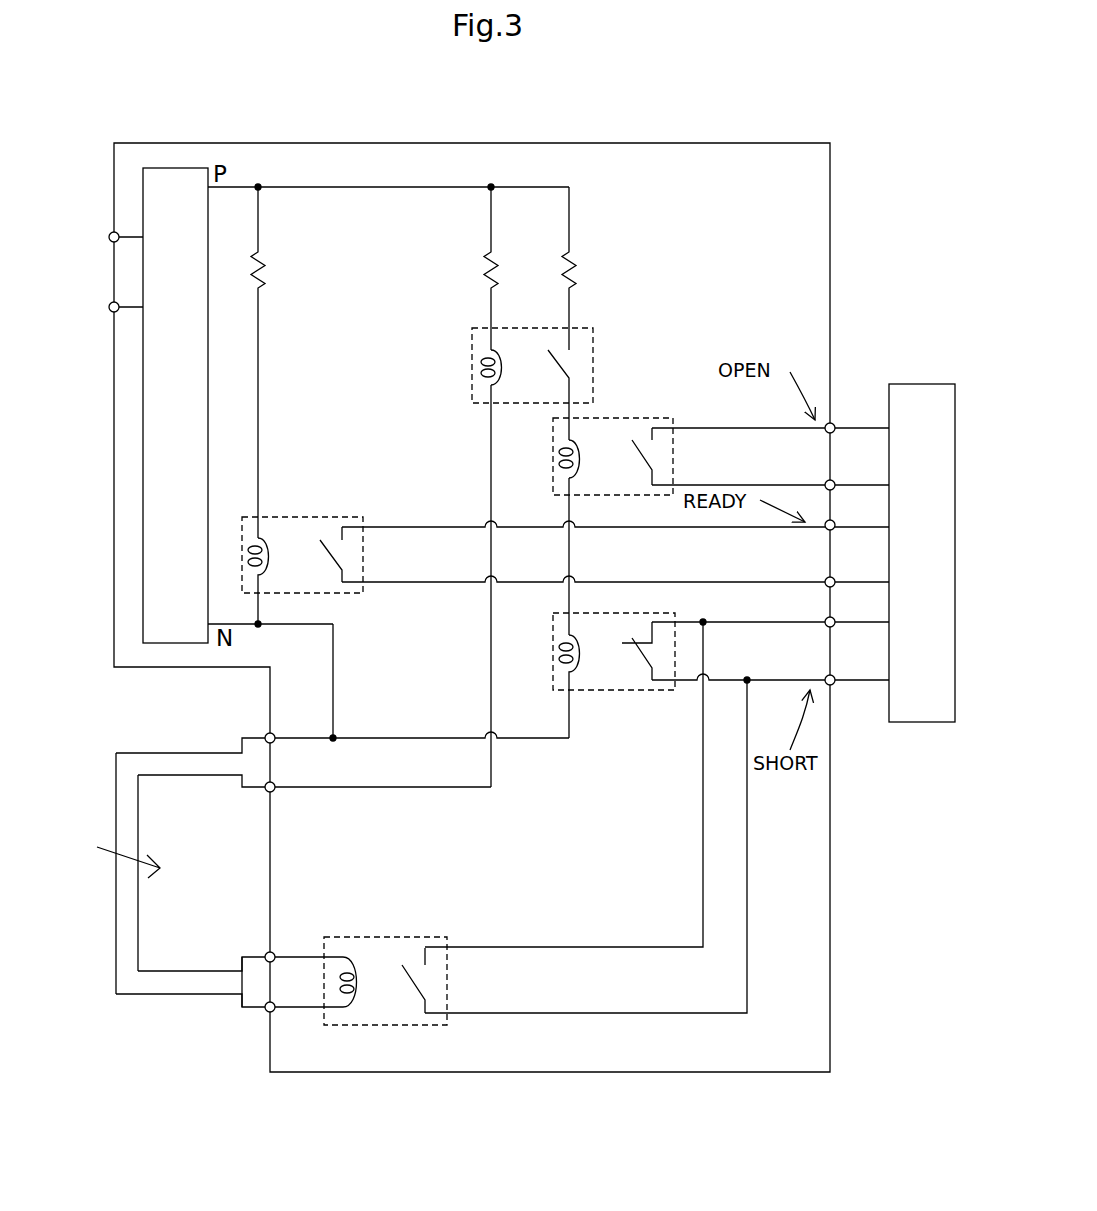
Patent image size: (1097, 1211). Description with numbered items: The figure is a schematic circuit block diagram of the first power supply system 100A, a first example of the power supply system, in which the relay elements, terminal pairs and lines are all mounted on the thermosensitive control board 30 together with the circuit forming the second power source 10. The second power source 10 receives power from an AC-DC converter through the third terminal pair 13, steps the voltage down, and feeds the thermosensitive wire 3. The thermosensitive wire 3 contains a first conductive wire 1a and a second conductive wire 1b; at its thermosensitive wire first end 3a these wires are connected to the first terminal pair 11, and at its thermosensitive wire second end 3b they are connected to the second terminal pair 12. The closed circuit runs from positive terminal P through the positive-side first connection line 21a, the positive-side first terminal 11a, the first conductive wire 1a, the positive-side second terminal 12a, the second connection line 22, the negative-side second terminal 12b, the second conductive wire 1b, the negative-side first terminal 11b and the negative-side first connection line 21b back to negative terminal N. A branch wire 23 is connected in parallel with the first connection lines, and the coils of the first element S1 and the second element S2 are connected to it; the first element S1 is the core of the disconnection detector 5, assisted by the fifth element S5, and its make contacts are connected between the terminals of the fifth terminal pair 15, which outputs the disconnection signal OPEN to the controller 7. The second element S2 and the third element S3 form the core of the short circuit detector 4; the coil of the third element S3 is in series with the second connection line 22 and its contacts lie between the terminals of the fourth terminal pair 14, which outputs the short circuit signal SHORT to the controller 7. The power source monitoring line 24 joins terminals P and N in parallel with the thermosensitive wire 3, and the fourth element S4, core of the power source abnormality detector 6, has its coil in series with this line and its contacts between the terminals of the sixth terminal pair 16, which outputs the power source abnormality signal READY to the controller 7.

The first power supply system 100A is at (742, 117).
The thermosensitive control board 30 is at (585, 140).
The second power source 10 is at (180, 168).
The third terminal pair 13 is at (98, 266).
The power source monitoring line 24 is at (260, 366).
The branch wire 23 is at (572, 217).
The disconnection detector 5 is at (614, 413).
The fifth element S5 is at (594, 353).
The first element S1 is at (638, 412).
The power source abnormality detector 6 is at (350, 598).
The fourth element S4 is at (320, 515).
The sixth terminal pair 16 is at (812, 547).
The fifth terminal pair 15 is at (842, 423).
The controller 7 is at (920, 384).
The short circuit detector 4 is at (432, 930).
The second element S2 is at (592, 708).
The third element S3 is at (384, 936).
The second connection line 22 is at (297, 1010).
The fourth terminal pair 14 is at (845, 696).
The negative-side first connection line 21b is at (335, 693).
The positive-side first connection line 21a is at (360, 788).
The first terminal pair 11 is at (288, 762).
The thermosensitive wire 3 is at (155, 857).
The second conductive wire 1b is at (130, 752).
The first conductive wire 1a is at (155, 776).
The thermosensitive wire first end 3a is at (238, 743).
The thermosensitive wire second end 3b is at (229, 964).
The second terminal pair 12 is at (230, 1003).
The negative-side first terminal 11b is at (275, 735).
The positive-side first terminal 11a is at (278, 792).
The positive-side second terminal 12a is at (264, 955).
The negative-side second terminal 12b is at (268, 1012).